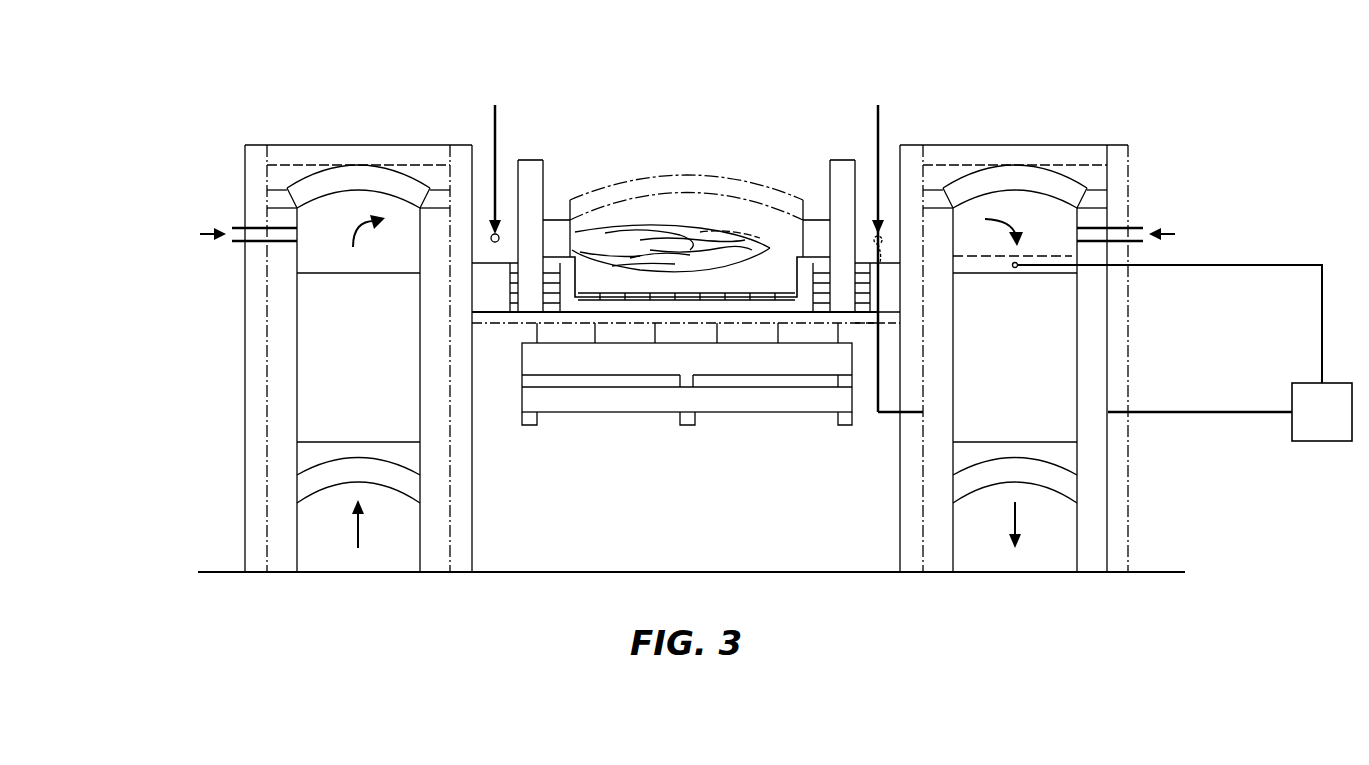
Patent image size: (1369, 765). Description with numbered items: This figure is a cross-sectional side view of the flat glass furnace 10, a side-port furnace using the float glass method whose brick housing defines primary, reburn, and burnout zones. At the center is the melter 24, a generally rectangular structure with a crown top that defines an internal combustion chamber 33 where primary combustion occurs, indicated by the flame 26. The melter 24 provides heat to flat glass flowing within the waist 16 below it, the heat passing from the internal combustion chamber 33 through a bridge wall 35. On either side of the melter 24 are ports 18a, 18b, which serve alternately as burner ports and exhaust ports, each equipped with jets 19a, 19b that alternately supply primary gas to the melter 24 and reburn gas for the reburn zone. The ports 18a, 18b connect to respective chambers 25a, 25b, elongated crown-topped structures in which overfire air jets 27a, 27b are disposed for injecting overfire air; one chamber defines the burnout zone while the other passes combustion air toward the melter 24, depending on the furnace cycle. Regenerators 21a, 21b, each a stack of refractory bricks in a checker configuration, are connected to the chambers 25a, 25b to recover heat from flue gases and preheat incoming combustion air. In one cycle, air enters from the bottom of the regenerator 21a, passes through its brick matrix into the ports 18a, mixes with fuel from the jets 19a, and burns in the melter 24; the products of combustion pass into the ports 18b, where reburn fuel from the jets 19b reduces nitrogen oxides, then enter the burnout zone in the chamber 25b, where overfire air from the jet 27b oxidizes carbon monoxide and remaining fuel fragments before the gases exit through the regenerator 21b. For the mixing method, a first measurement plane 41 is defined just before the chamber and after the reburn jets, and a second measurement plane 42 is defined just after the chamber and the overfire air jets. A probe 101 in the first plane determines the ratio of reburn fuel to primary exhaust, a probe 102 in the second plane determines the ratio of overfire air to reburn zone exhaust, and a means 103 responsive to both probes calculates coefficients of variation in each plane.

The flat glass furnace 10 is at (1092, 74).
The waist 16 is at (632, 303).
The port 18a is at (503, 215).
The port 18b is at (885, 215).
The jet 19a is at (495, 242).
The jet 19b is at (872, 230).
The regenerator 21a is at (315, 362).
The regenerator 21b is at (1060, 362).
The melter 24 is at (700, 160).
The chamber 25a is at (404, 257).
The chamber 25b is at (994, 250).
The flame 26 is at (645, 265).
The overfire air jet 27a is at (275, 232).
The overfire air jet 27b is at (1090, 228).
The internal combustion chamber 33 is at (769, 229).
The bridge wall 35 is at (745, 297).
The first measurement plane 41 is at (890, 326).
The second measurement plane 42 is at (1047, 252).
The probe 101 is at (870, 385).
The probe 102 is at (1167, 270).
The means responsive to the probes 103 is at (1320, 445).